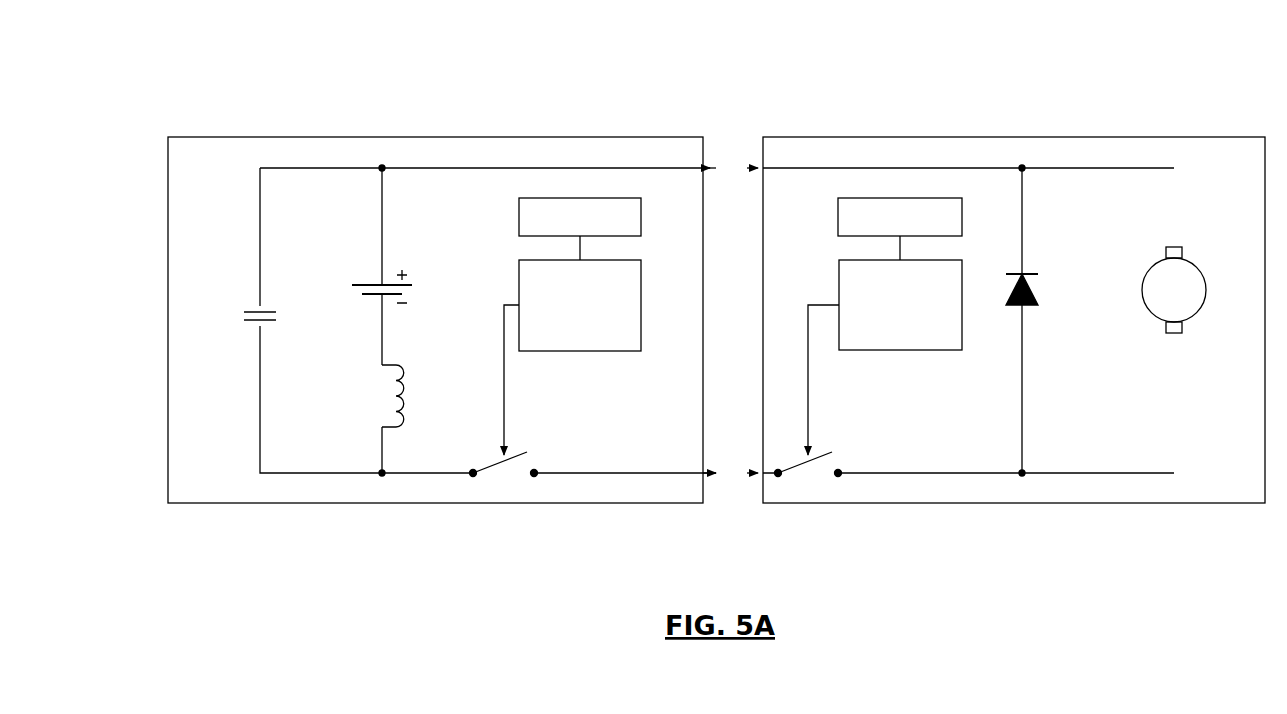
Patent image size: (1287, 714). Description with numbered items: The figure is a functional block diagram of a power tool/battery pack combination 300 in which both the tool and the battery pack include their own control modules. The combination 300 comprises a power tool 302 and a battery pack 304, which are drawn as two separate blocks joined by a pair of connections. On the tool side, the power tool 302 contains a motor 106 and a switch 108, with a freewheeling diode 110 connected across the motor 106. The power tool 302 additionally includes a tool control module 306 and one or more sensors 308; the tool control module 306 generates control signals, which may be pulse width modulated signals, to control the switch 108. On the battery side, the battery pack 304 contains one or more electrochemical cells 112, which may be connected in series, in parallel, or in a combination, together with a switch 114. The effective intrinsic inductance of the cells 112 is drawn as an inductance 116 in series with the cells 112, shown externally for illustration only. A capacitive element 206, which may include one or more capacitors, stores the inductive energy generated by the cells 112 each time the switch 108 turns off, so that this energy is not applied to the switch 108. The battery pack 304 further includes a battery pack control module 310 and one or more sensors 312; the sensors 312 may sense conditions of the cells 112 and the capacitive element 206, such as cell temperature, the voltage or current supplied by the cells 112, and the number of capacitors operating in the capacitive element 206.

The power tool/battery pack combination 300 is at (749, 82).
The power tool 302 is at (1017, 137).
The battery pack 304 is at (440, 137).
The tool control module 306 is at (962, 273).
The sensors 308 is at (962, 216).
The battery pack control module 310 is at (641, 303).
The sensors 312 is at (641, 216).
The electrochemical cells 112 is at (361, 284).
The switch 114 is at (521, 453).
The inductance 116 is at (402, 365).
The capacitive element 206 is at (270, 311).
The switch 108 is at (818, 443).
The freewheeling diode 110 is at (1040, 300).
The motor 106 is at (1205, 268).